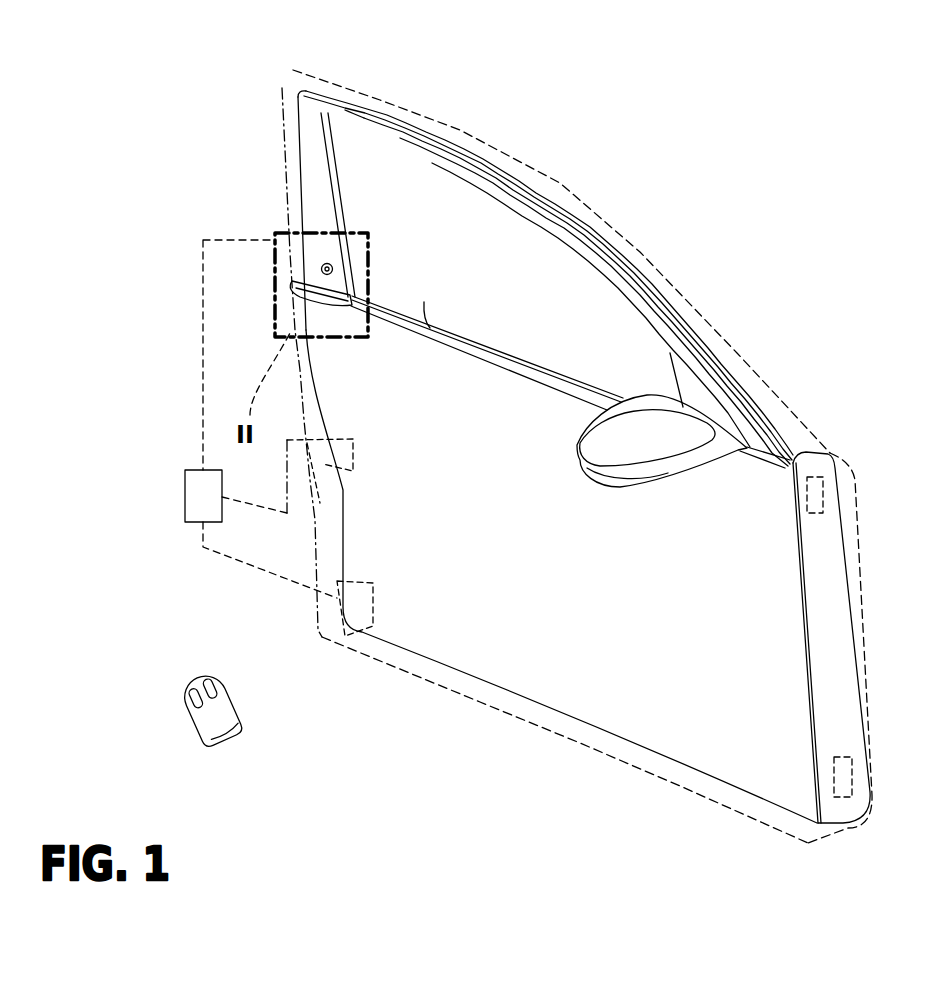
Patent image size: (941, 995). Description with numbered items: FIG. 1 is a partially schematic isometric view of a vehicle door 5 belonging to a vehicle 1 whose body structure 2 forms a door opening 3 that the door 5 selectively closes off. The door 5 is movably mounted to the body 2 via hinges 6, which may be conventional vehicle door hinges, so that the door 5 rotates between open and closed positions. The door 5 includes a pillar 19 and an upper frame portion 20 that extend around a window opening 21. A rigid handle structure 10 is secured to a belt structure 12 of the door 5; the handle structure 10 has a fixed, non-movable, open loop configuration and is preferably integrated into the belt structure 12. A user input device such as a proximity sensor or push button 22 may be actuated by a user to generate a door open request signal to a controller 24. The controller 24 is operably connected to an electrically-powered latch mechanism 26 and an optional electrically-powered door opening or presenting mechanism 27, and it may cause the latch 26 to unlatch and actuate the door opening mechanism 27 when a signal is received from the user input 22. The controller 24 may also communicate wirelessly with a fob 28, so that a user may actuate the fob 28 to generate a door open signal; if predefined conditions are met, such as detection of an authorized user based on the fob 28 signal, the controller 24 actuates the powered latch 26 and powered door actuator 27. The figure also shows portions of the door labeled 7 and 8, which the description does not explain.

The vehicle 1 is at (651, 272).
The body structure 2 is at (729, 345).
The door opening 3 is at (595, 232).
The vehicle door 5 is at (453, 618).
The hinges 6 is at (825, 493).
The door rear edge 7 is at (857, 678).
The door lower panel 8 is at (607, 670).
The rigid handle structure 10 is at (290, 293).
The belt structure 12 is at (424, 302).
The pillar 19 is at (312, 165).
The upper frame portion 20 is at (494, 180).
The window opening 21 is at (490, 251).
The push button 22 is at (326, 263).
The controller 24 is at (186, 494).
The electrically-powered latch mechanism 26 is at (313, 508).
The electrically-powered door opening mechanism 27 is at (357, 635).
The fob 28 is at (205, 710).